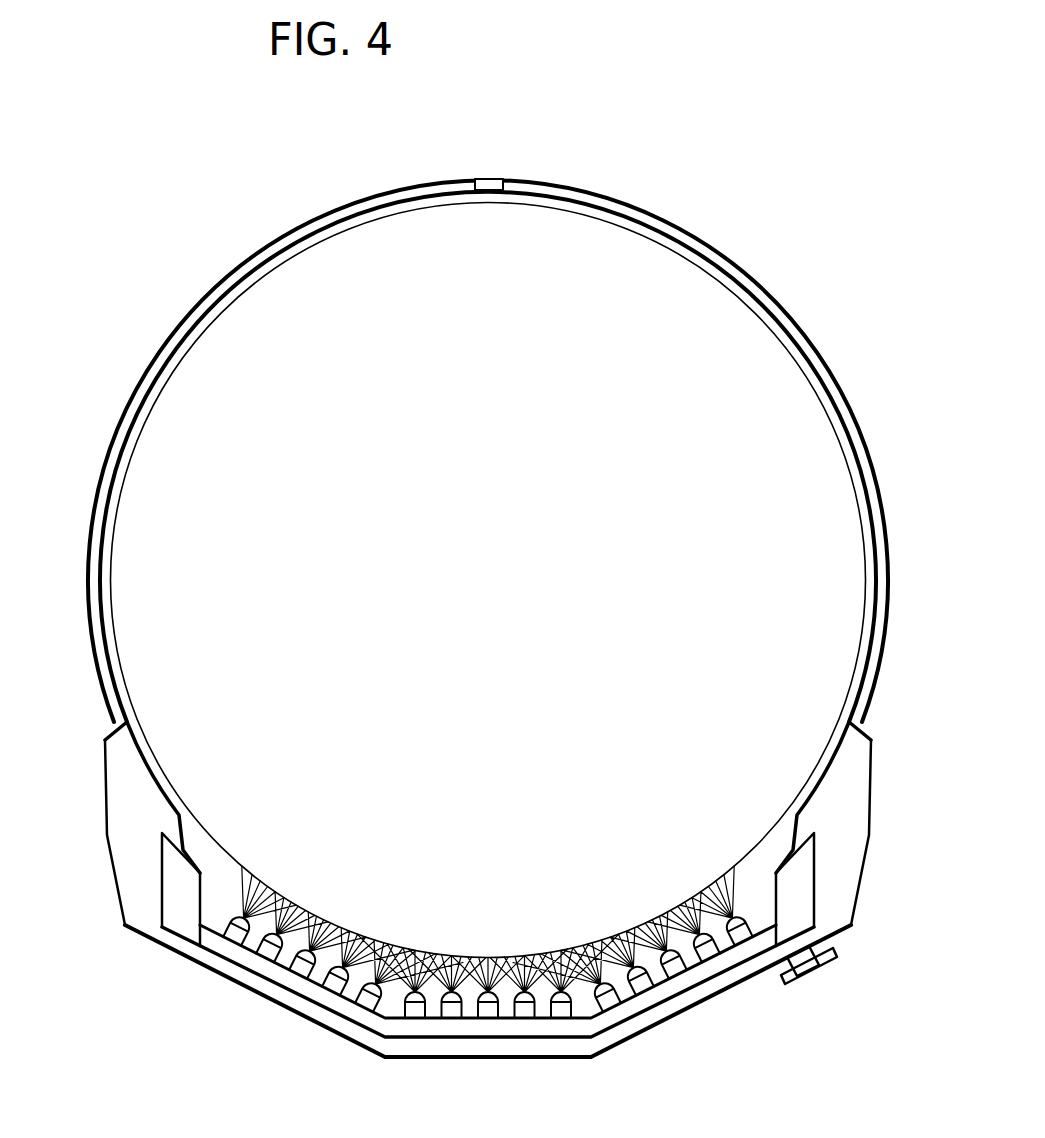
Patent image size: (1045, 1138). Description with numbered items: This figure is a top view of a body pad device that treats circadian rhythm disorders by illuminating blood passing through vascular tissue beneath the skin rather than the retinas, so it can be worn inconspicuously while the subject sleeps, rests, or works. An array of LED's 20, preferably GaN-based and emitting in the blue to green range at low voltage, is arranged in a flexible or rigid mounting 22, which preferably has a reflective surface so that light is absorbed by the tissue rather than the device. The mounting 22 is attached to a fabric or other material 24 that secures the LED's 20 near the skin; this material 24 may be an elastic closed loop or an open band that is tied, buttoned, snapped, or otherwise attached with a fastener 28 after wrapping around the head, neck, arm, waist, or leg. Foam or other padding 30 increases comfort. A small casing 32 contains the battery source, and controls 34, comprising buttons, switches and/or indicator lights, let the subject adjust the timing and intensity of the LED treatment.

The LED's 20 is at (338, 984).
The mounting 22 is at (247, 958).
The material 24 is at (136, 400).
The fastener 28 is at (490, 179).
The padding 30 is at (146, 818).
The casing 32 is at (183, 922).
The controls 34 is at (812, 956).